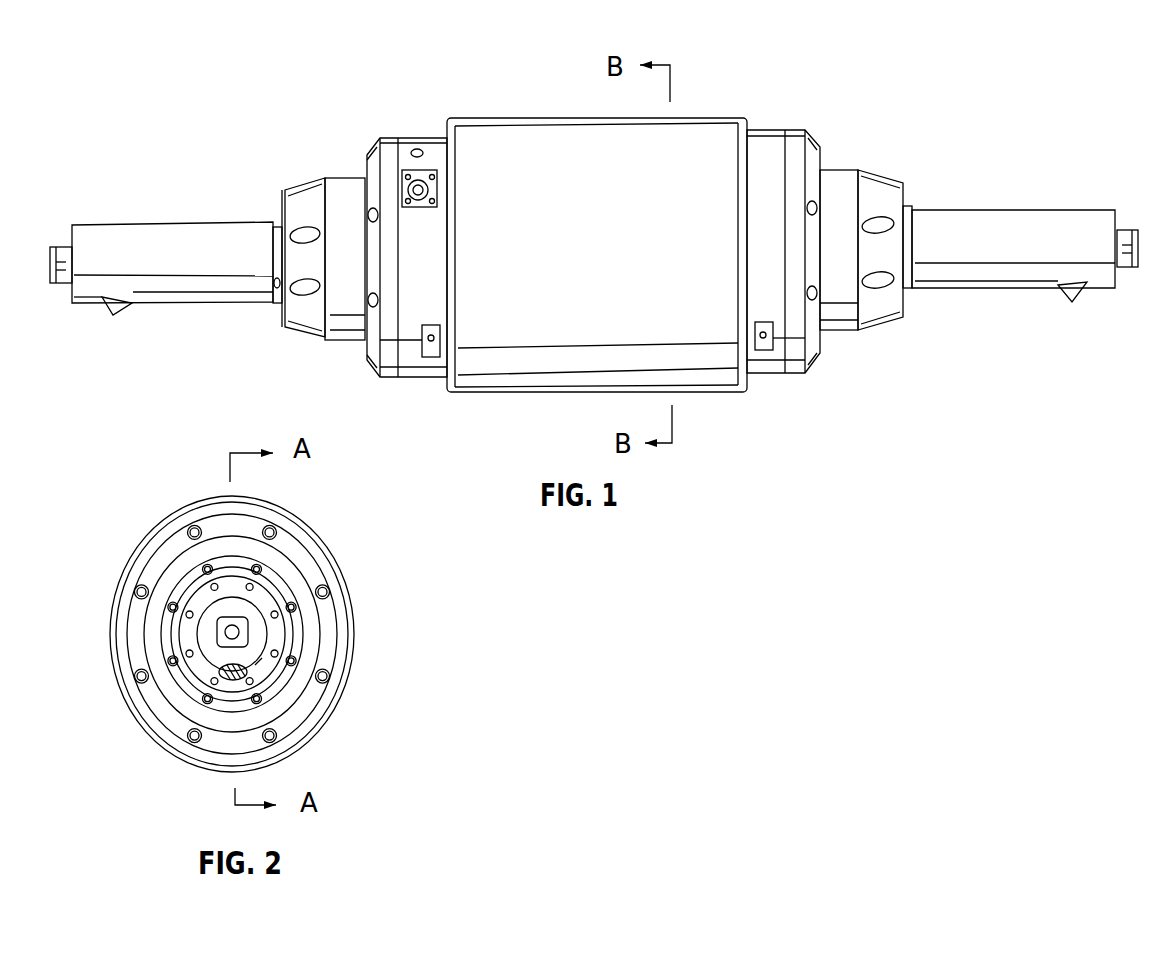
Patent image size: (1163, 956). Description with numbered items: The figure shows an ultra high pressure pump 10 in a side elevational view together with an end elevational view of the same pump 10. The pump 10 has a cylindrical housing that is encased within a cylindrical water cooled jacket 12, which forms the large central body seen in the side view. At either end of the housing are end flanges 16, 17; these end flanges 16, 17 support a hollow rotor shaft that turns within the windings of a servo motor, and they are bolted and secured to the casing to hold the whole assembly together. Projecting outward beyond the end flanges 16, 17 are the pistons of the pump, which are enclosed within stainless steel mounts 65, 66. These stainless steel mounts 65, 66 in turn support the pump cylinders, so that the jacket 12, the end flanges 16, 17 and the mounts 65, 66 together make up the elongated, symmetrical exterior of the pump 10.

In FIG. 1, the pump 10 is at (712, 98).
In FIG. 2, the pump 10 is at (390, 631).
In FIG. 1, the cylindrical water cooled jacket 12 is at (602, 392).
In FIG. 1, the end flange 16 is at (408, 140).
In FIG. 1, the end flange 17 is at (768, 132).
In FIG. 1, the stainless steel mount 65 is at (355, 324).
In FIG. 1, the stainless steel mount 66 is at (838, 313).